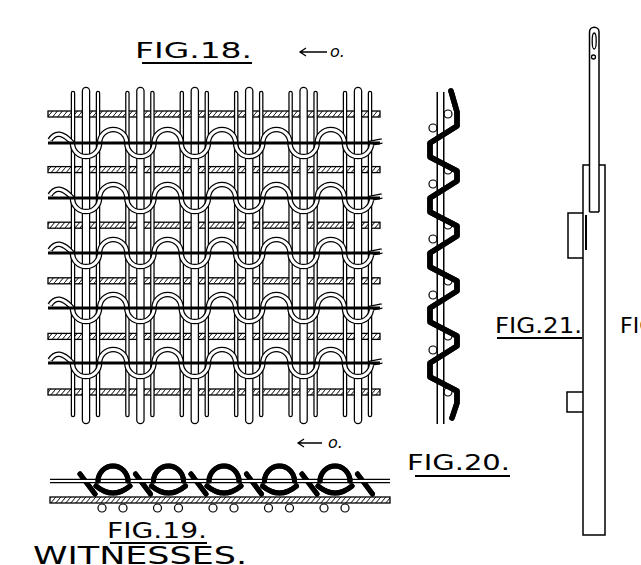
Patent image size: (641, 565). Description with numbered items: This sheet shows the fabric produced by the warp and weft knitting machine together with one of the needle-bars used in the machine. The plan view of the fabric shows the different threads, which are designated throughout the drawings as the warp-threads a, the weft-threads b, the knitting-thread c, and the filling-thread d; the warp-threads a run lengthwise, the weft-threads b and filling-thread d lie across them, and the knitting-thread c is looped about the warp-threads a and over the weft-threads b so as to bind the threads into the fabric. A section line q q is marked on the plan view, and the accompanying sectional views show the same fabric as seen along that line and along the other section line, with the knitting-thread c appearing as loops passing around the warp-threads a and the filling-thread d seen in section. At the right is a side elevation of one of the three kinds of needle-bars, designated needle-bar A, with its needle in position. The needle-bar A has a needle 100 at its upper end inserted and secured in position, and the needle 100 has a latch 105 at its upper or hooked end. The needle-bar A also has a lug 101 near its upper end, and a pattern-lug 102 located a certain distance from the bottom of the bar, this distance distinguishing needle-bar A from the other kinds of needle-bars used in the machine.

In FIG. 18, the warp-threads a is at (358, 88).
In FIG. 20, the warp-threads a is at (441, 89).
In FIG. 19, the warp-threads a is at (366, 482).
In FIG. 18, the weft-threads b is at (416, 144).
In FIG. 20, the weft-threads b is at (430, 365).
In FIG. 19, the weft-threads b is at (414, 491).
In FIG. 18, the knitting-thread c is at (56, 356).
In FIG. 20, the knitting-thread c is at (456, 369).
In FIG. 19, the knitting-thread c is at (436, 508).
In FIG. 18, the filling-thread d is at (381, 162).
In FIG. 20, the filling-thread d is at (445, 393).
In FIG. 19, the filling-thread d is at (406, 510).
In FIG. 18, the section line q q is at (403, 162).
In FIG. 21, the needle 100 is at (600, 118).
In FIG. 21, the lug 101 is at (569, 350).
In FIG. 21, the pattern-lug 102 is at (555, 402).
In FIG. 21, the latch 105 is at (589, 48).
In FIG. 21, the needle-bar A is at (556, 517).